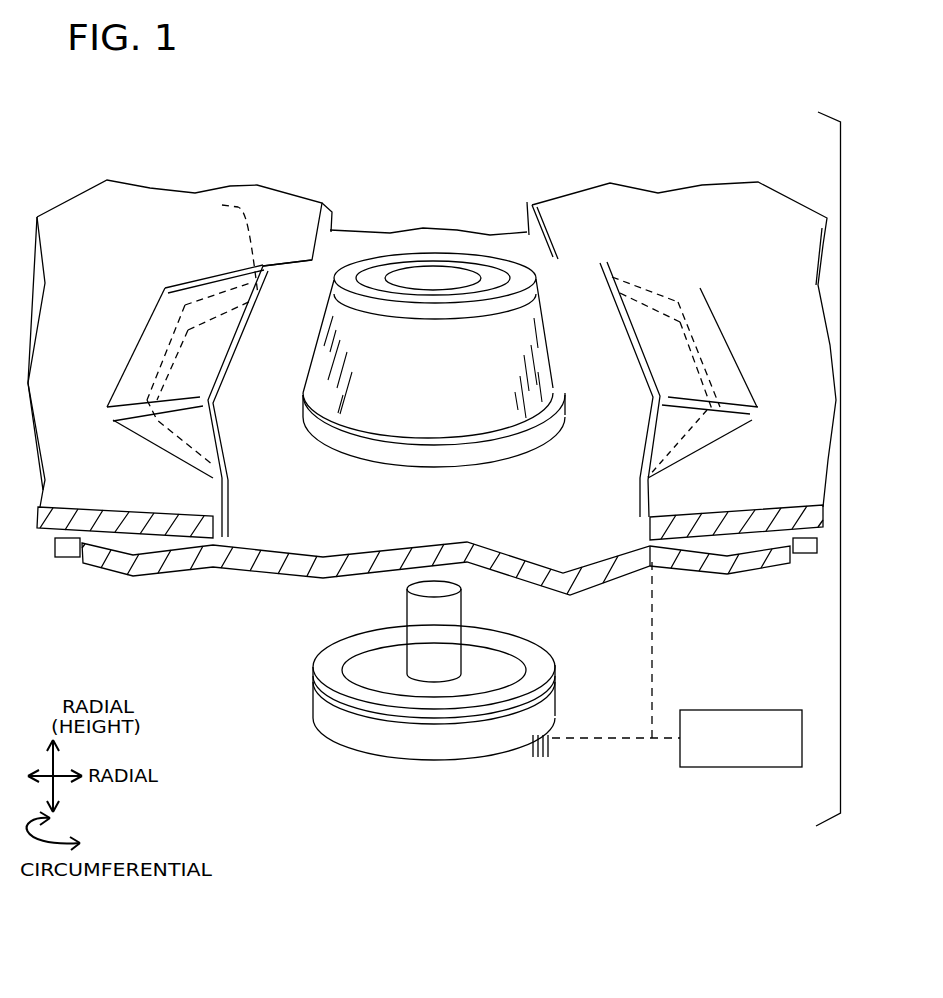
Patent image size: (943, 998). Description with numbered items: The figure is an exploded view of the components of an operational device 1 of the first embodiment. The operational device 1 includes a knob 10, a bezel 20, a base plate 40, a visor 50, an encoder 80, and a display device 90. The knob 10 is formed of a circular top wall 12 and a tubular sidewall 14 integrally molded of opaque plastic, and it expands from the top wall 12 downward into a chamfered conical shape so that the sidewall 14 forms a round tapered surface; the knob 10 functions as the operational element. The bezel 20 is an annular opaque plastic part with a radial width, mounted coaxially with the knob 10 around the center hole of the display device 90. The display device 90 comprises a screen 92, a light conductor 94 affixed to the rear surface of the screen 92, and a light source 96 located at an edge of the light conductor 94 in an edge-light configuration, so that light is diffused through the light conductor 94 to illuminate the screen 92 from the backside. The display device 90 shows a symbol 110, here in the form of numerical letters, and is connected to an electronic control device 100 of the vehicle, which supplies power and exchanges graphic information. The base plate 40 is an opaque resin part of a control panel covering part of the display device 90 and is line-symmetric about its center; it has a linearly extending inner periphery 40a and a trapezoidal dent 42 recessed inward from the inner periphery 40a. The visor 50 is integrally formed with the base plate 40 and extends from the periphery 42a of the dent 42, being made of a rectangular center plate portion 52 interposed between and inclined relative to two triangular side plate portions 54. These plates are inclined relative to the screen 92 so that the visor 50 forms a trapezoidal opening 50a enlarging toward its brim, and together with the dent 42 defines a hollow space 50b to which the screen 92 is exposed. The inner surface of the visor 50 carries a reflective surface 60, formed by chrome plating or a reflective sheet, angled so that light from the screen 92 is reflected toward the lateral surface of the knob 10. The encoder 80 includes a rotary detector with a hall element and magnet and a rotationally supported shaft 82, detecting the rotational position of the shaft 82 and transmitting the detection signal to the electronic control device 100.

The operational device 1 is at (542, 99).
The knob 10 is at (428, 247).
The top wall 12 is at (392, 260).
The sidewall 14 is at (324, 374).
The bezel 20 is at (520, 463).
The base plate 40 is at (641, 167).
The inner periphery 40a is at (527, 200).
The dent 42 is at (643, 318).
The periphery of the dent 42a is at (700, 370).
The visor 50 is at (715, 284).
The opening 50a is at (248, 332).
The hollow space 50b is at (213, 356).
The center plate portion 52 is at (180, 353).
The side plate portion 54 is at (201, 278).
The reflective surface 60 is at (224, 246).
The encoder 80 is at (508, 765).
The shaft 82 is at (407, 608).
The display device 90 is at (657, 574).
The screen 92 is at (560, 593).
The light conductor 94 is at (720, 573).
The light source 96 is at (72, 557).
The electronic control device 100 is at (752, 767).
The symbol 110 is at (314, 494).